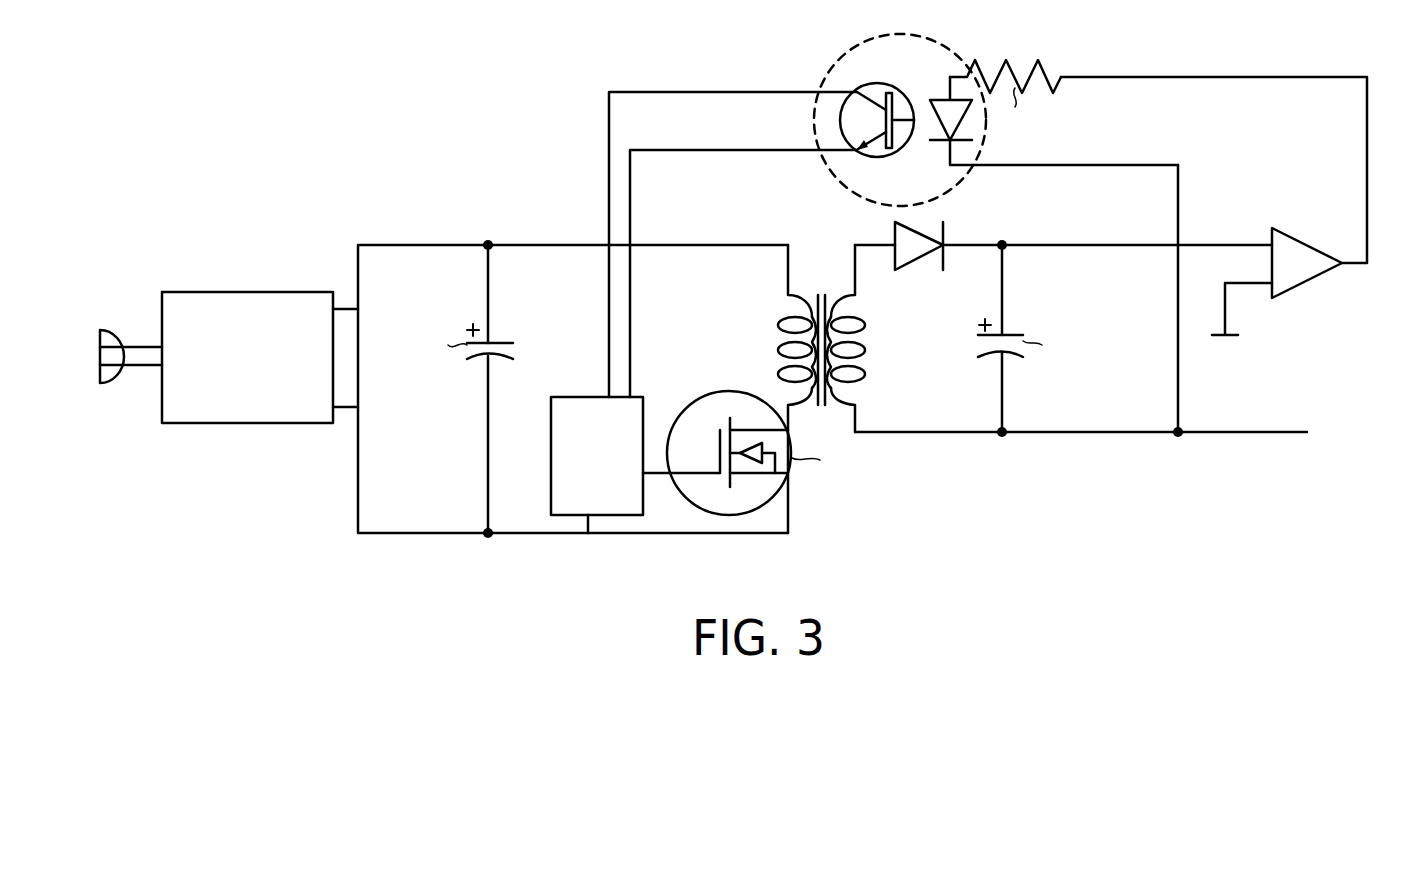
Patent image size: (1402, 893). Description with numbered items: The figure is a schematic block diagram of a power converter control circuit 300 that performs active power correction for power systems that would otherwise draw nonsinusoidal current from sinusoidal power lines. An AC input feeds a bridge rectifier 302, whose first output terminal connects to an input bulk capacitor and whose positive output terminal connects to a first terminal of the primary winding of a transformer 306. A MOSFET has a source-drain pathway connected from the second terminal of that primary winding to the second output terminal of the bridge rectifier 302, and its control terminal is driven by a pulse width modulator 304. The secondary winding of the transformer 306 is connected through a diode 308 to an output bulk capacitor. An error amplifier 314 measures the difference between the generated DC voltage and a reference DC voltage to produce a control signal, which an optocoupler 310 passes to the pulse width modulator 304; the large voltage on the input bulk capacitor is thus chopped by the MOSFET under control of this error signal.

The power converter control circuit 300 is at (402, 150).
The bridge rectifier 302 is at (267, 403).
The pulse width modulator 304 is at (618, 481).
The transformer 306 is at (783, 320).
The diode 308 is at (918, 265).
The optocoupler 310 is at (952, 188).
The error amplifier 314 is at (1315, 283).